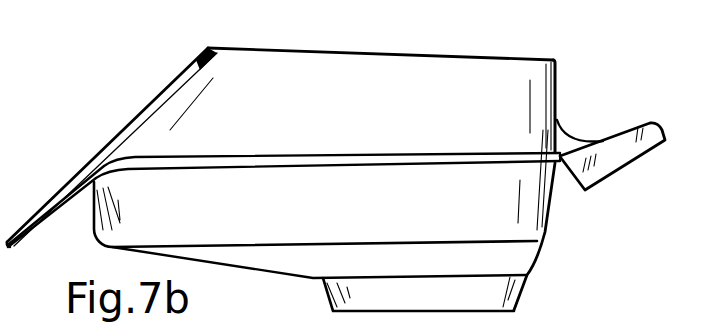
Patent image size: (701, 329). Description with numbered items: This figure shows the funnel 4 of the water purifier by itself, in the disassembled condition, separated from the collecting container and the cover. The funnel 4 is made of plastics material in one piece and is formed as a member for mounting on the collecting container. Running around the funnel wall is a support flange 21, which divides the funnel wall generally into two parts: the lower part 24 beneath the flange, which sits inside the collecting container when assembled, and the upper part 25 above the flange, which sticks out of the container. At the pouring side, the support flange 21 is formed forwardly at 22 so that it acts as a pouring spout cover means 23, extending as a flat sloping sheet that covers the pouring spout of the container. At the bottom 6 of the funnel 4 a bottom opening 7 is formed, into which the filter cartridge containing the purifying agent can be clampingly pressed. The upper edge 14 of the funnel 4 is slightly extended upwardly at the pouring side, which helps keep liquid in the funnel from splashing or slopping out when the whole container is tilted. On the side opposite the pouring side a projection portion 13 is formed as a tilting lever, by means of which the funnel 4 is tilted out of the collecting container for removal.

The funnel 4 is at (560, 67).
The bottom of the funnel 6 is at (540, 246).
The bottom opening 7 is at (518, 293).
The projection portion 13 is at (642, 126).
The upper edge of the funnel 14 is at (237, 47).
The support flange 21 is at (310, 155).
The forwardly formed portion of the support flange 22 is at (53, 213).
The pouring spout cover means 23 is at (93, 148).
The lower part of the funnel wall 24 is at (416, 213).
The upper part of the funnel wall 25 is at (418, 122).